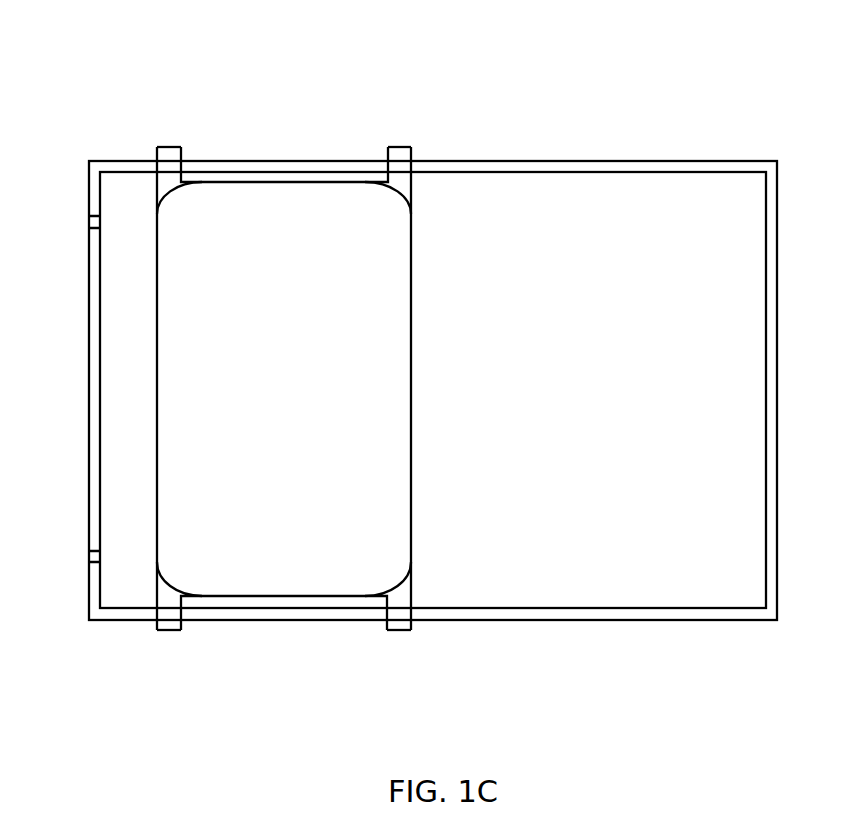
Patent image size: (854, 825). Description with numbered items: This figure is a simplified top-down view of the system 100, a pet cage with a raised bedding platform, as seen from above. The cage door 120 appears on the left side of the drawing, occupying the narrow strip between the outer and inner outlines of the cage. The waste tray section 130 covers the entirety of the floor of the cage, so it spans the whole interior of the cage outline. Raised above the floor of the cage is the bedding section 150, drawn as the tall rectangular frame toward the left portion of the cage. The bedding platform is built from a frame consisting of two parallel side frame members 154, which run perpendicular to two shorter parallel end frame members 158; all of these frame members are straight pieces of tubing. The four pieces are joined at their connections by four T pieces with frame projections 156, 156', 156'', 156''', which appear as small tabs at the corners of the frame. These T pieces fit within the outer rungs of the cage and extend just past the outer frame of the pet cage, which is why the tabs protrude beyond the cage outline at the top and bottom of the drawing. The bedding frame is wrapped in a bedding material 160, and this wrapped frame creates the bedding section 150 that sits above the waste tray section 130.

The system 100 is at (528, 53).
The cage door 120 is at (81, 467).
The waste tray section 130 is at (746, 460).
The bedding section 150 is at (153, 562).
The side frame members 154 is at (157, 345).
The T piece with frame projection 156 is at (186, 116).
The T piece with frame projection 156' is at (185, 663).
The T piece with frame projection 156'' is at (417, 661).
The T piece with frame projection 156''' is at (421, 116).
The end frame members 158 is at (300, 598).
The bedding material 160 is at (243, 580).